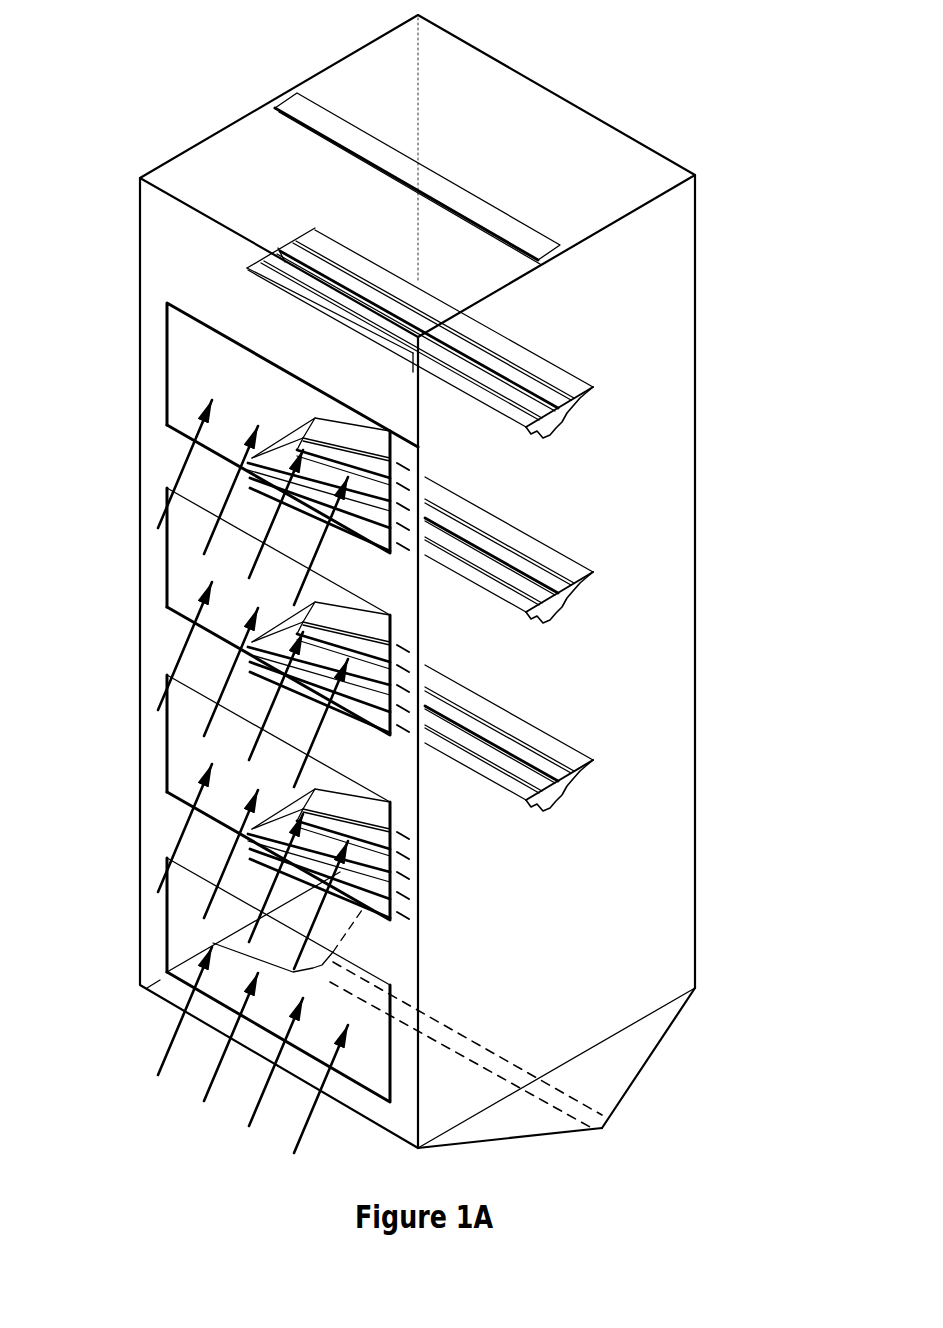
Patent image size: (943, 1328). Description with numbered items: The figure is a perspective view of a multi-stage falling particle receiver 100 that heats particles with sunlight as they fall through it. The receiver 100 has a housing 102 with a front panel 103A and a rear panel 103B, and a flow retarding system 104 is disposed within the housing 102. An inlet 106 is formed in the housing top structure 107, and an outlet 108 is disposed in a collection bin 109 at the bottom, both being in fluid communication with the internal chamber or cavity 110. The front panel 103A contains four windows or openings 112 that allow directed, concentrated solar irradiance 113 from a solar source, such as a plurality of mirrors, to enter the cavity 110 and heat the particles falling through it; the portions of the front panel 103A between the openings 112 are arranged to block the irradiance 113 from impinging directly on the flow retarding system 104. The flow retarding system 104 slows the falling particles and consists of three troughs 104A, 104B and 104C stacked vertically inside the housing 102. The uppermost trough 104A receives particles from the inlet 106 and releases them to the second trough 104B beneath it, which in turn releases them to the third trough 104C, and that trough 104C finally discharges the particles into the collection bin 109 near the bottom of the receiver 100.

The multi-stage falling particle receiver 100 is at (566, 50).
The housing 102 is at (712, 283).
The front panel 103A is at (158, 638).
The rear panel 103B is at (700, 663).
The flow retarding system 104 is at (158, 296).
The first trough 104A is at (565, 425).
The second trough 104B is at (565, 605).
The third trough 104C is at (565, 798).
The inlet 106 is at (335, 145).
The housing top structure 107 is at (612, 155).
The outlet 108 is at (605, 1128).
The collection bin 109 is at (655, 1052).
The internal chamber or cavity 110 is at (183, 350).
The openings 112 is at (183, 576).
The concentrated solar irradiance 113 is at (156, 1048).